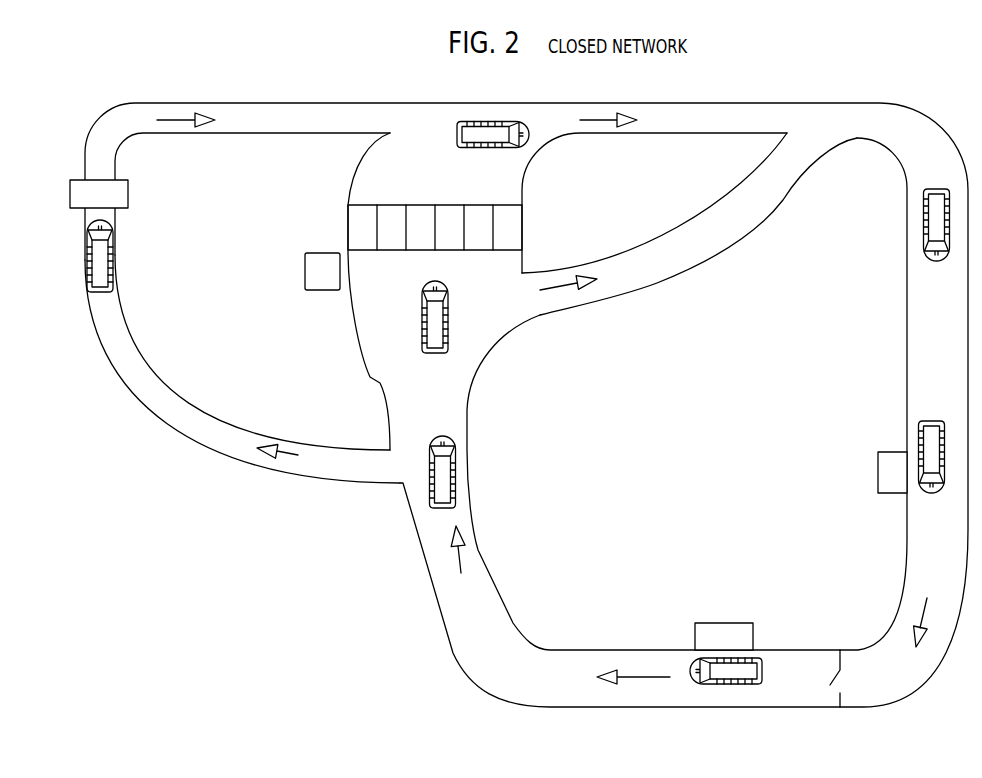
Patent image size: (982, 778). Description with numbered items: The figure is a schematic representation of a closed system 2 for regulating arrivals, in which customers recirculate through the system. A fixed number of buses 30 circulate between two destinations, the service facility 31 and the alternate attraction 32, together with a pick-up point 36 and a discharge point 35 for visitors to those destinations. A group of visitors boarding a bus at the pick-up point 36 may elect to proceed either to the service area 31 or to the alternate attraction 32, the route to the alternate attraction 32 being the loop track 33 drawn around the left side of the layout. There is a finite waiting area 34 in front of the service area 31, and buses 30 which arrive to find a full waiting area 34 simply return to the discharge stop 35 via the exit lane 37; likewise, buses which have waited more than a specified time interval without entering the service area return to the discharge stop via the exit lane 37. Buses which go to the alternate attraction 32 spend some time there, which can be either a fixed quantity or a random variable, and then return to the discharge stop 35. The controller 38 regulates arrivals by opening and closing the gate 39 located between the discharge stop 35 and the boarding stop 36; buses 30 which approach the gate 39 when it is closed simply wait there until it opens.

The system 2 is at (910, 98).
The buses 30 is at (427, 500).
The service facility 31 is at (525, 229).
The alternate attraction 32 is at (132, 193).
The return loop track 33 is at (197, 418).
The waiting area 34 is at (439, 373).
The discharge point 35 is at (877, 483).
The pick-up point 36 is at (777, 607).
The exit lane 37 is at (732, 234).
The controller 38 is at (305, 280).
The gate 39 is at (833, 692).